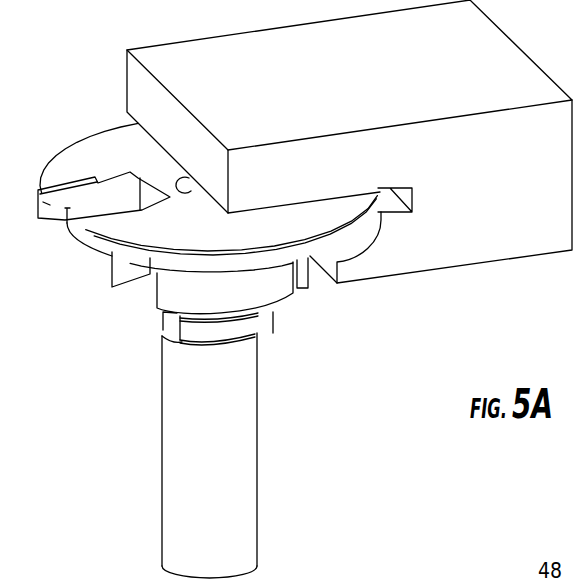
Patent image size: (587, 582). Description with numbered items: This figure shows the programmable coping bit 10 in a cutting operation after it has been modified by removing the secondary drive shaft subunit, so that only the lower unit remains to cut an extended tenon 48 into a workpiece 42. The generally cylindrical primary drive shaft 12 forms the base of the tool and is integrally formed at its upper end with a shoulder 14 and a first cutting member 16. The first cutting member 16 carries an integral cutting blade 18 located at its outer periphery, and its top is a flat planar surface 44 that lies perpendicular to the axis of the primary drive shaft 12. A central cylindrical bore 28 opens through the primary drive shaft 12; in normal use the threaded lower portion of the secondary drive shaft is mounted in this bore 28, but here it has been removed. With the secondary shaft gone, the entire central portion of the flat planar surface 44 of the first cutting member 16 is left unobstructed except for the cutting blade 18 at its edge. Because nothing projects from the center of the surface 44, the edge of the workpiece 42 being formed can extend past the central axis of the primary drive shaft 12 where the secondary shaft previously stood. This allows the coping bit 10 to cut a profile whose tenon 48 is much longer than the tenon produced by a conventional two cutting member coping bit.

The programmable coping bit 10 is at (101, 485).
The primary drive shaft 12 is at (257, 505).
The shoulder 14 is at (233, 328).
The first cutting member 16 is at (181, 294).
The cutting blade 18 is at (63, 212).
The central cylindrical bore 28 is at (196, 193).
The workpiece 42 is at (503, 233).
The flat planar surface 44 is at (113, 255).
The tenon 48 is at (143, 90).